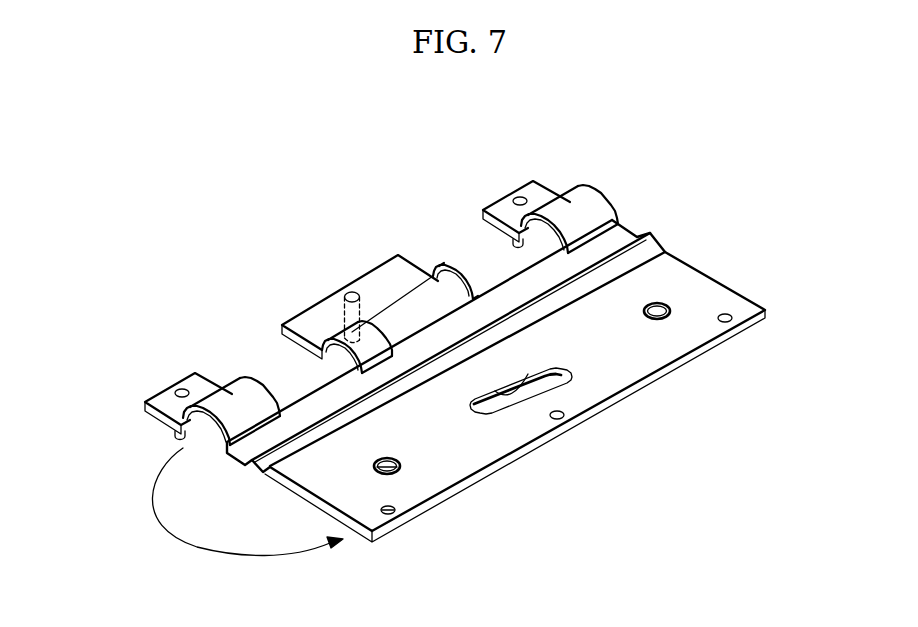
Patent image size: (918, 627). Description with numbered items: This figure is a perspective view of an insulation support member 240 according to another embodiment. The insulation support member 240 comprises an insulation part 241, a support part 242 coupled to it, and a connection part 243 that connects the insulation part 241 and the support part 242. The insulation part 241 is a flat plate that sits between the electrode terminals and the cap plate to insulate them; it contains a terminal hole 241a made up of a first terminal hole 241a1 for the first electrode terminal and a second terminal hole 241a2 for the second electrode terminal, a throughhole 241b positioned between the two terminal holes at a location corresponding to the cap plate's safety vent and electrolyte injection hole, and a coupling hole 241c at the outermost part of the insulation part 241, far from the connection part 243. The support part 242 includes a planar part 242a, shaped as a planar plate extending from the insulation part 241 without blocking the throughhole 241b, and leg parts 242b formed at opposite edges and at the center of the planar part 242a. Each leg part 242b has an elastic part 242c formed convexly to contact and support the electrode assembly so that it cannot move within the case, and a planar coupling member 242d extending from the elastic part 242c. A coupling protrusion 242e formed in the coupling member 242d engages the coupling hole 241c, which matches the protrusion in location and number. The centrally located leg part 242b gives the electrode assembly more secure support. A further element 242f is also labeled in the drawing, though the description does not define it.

The insulation support member 240 is at (169, 124).
The insulation part 241 is at (710, 290).
The terminal hole 241a is at (688, 462).
The first terminal hole 241a1 is at (384, 458).
The second terminal hole 241a2 is at (642, 313).
The throughhole 241b is at (528, 374).
The coupling hole 241c is at (720, 322).
The support part 242 is at (747, 148).
The planar part 242a is at (623, 233).
The leg part 242b is at (680, 172).
The elastic part 242c is at (601, 209).
The coupling member 242d is at (541, 183).
The coupling protrusion 242e is at (512, 243).
The hinge shaft 242f is at (367, 355).
The connection part 243 is at (654, 247).